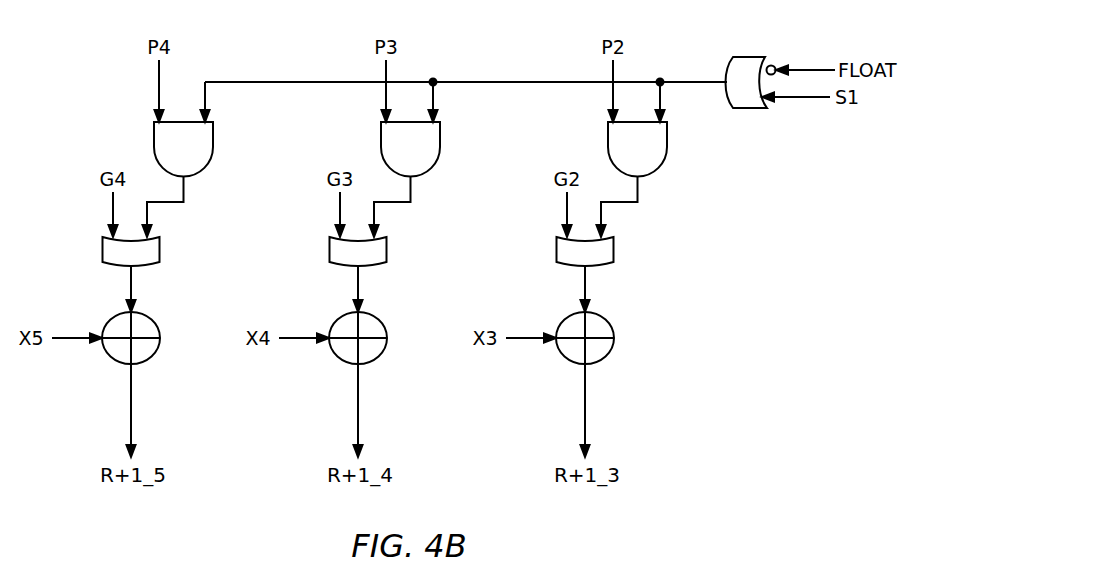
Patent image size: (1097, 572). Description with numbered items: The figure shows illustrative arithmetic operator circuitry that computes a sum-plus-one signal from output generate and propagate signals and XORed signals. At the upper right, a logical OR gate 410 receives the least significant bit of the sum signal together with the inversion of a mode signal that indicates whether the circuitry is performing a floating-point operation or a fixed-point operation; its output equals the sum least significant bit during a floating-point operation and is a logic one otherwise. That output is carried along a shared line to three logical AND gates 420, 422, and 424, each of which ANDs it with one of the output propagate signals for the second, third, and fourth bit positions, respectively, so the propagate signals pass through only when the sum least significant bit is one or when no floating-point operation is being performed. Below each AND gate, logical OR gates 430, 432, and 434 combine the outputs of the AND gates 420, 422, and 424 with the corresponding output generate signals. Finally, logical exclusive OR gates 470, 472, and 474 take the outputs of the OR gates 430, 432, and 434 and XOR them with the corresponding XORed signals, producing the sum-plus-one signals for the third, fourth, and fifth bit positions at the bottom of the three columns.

The logical OR gate 410 is at (748, 57).
The logical AND gate 420 is at (608, 140).
The logical AND gate 422 is at (381, 140).
The logical AND gate 424 is at (154, 140).
The logical OR gate 430 is at (556, 248).
The logical OR gate 432 is at (330, 248).
The logical OR gate 434 is at (102, 248).
The logical exclusive OR gate 470 is at (566, 358).
The logical exclusive OR gate 472 is at (339, 358).
The logical exclusive OR gate 474 is at (112, 358).